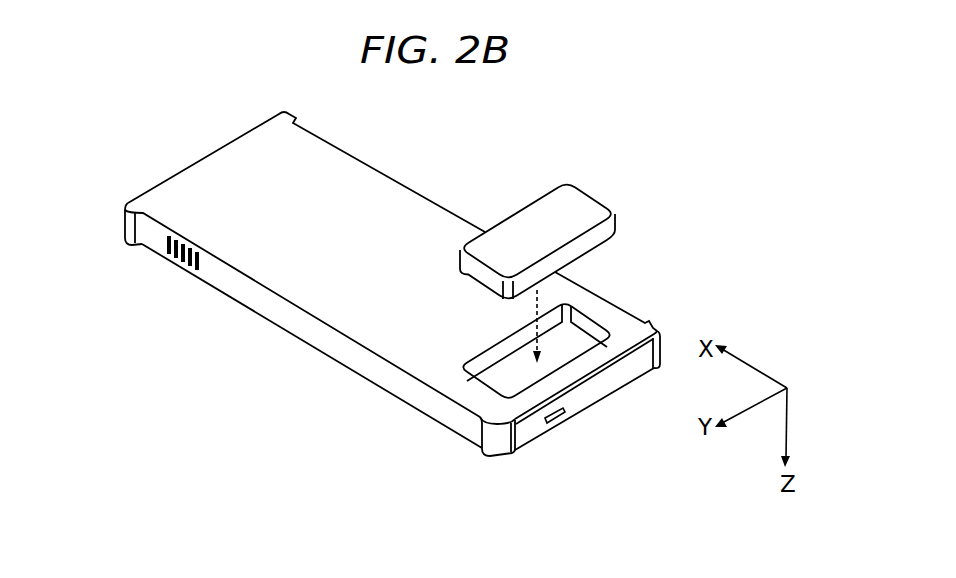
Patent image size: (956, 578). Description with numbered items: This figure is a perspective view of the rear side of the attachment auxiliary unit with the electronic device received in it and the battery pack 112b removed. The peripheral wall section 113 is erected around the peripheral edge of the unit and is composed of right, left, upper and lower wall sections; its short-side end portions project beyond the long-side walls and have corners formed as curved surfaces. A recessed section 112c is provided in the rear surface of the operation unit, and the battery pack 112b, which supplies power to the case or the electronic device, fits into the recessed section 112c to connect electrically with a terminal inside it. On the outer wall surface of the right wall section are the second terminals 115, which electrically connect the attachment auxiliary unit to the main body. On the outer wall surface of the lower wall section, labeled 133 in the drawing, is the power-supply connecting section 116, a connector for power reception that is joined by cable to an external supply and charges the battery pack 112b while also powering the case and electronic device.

The peripheral wall section 113 is at (433, 202).
The side surface 113d of housing 133 is at (627, 378).
The battery pack 112b is at (583, 210).
The recessed section 112c is at (583, 341).
The second terminals 115 is at (166, 239).
The power-supply connecting section 116 is at (564, 424).